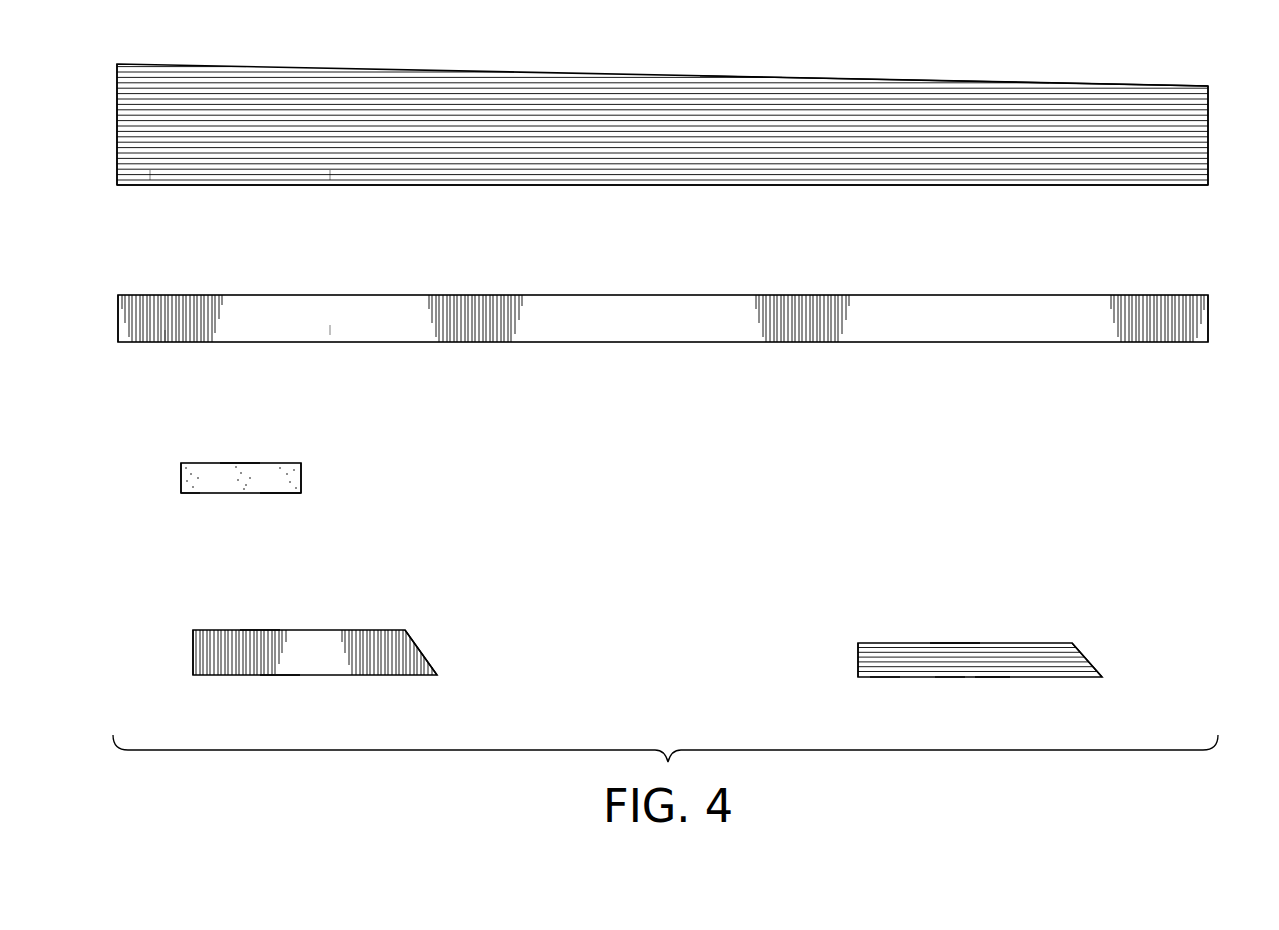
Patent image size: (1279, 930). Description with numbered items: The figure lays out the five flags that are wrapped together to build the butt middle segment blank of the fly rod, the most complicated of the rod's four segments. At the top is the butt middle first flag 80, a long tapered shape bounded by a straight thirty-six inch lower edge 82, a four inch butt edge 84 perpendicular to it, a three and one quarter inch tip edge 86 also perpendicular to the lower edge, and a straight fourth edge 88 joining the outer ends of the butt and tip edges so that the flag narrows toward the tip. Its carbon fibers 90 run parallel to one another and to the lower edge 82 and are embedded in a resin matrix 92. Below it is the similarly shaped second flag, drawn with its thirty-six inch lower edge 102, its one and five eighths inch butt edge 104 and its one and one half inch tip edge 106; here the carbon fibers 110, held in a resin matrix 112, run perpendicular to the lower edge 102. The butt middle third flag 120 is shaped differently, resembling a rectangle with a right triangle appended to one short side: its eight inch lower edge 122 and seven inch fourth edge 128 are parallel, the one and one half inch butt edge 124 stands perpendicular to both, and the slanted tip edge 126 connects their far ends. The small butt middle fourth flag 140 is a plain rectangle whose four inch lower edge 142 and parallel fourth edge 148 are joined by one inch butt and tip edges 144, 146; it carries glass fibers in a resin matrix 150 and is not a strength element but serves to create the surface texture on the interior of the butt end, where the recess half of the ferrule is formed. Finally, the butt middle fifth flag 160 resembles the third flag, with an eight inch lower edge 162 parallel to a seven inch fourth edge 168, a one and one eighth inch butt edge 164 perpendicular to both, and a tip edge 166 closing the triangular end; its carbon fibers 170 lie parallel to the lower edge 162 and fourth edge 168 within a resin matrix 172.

The butt middle first flag 80 is at (365, 77).
The lower edge 82 is at (753, 185).
The butt edge 84 is at (117, 126).
The tip edge 86 is at (1208, 126).
The fourth edge 88 is at (940, 80).
The carbon fibers 90 is at (162, 170).
The resin matrix 92 is at (330, 170).
The lower edge 102 is at (752, 343).
The butt edge 104 is at (118, 320).
The tip edge 106 is at (1208, 320).
The carbon fibers 110 is at (165, 345).
The resin matrix 112 is at (330, 325).
The butt middle third flag 120 is at (340, 630).
The lower edge 122 is at (283, 675).
The butt edge 124 is at (193, 647).
The tip edge 126 is at (416, 647).
The fourth edge 128 is at (258, 630).
The butt middle fourth flag 140 is at (210, 493).
The lower edge 142 is at (272, 493).
The butt edge 144 is at (181, 474).
The tip edge 146 is at (301, 476).
The fourth edge 148 is at (240, 463).
The resin matrix 150 is at (190, 493).
The butt middle fifth flag 160 is at (1068, 677).
The lower edge 162 is at (990, 677).
The butt edge 164 is at (858, 655).
The tip edge 166 is at (1080, 655).
The fourth edge 168 is at (955, 643).
The carbon fibers 170 is at (950, 677).
The resin matrix 172 is at (885, 677).